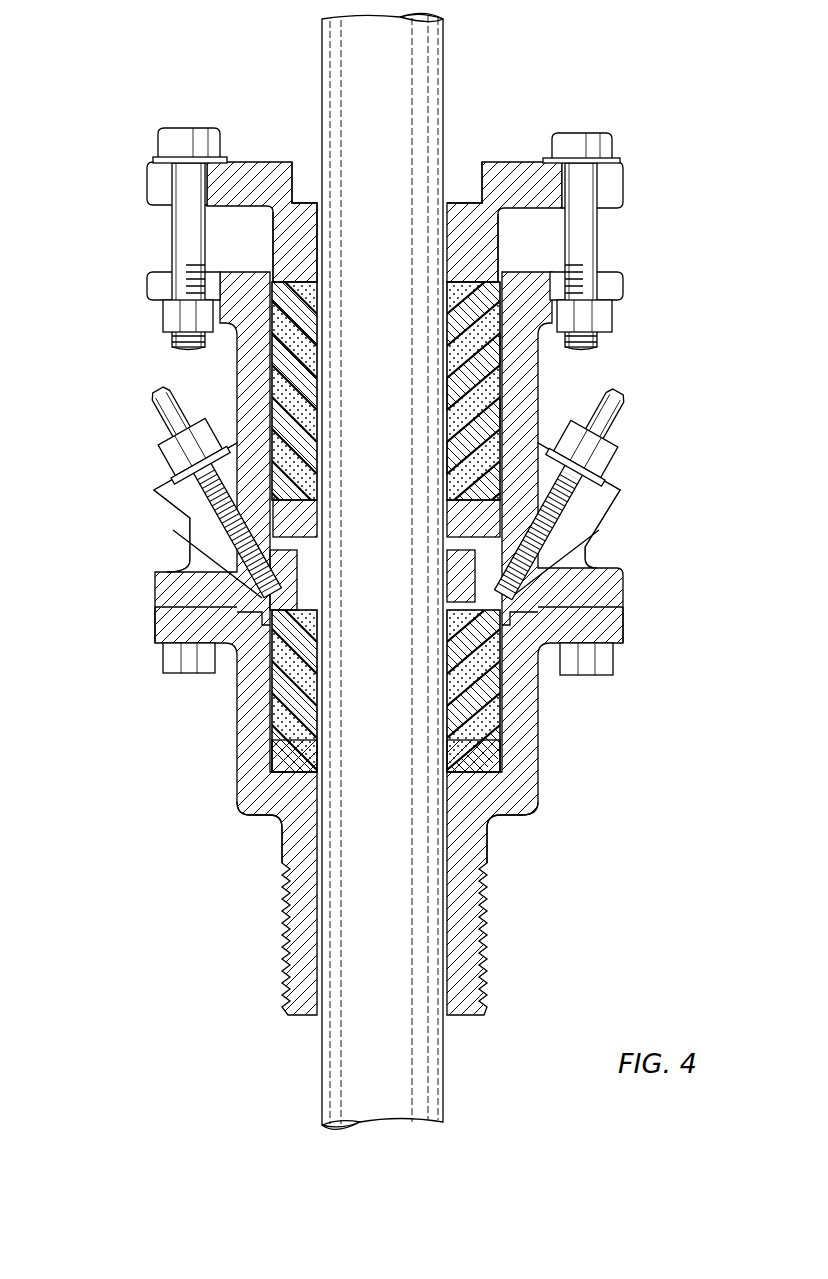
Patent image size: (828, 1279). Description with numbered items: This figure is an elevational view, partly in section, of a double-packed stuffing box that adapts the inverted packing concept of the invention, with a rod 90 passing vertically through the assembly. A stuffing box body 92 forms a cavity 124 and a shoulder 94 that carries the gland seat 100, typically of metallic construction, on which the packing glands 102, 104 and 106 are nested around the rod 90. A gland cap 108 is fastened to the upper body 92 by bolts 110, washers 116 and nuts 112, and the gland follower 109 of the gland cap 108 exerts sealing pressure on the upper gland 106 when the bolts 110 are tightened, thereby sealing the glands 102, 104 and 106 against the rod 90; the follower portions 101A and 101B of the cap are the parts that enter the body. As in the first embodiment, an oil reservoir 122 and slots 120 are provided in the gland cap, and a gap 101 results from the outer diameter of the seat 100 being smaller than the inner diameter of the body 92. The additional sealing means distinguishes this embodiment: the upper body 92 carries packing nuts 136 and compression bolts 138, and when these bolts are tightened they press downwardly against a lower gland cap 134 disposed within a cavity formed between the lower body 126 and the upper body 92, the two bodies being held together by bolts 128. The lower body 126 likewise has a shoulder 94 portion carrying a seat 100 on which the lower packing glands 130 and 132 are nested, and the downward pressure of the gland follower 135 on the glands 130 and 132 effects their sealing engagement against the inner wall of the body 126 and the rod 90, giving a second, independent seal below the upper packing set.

The rod 90 is at (440, 45).
The stuffing box body 92 is at (522, 468).
The shoulder 94 is at (552, 548).
The gland seat 100 is at (470, 493).
The gap 101 is at (550, 538).
The lower follower portion 101A is at (273, 262).
The upper follower portion 101B is at (318, 200).
The packing gland 102 is at (503, 423).
The packing gland 104 is at (492, 377).
The upper gland 106 is at (472, 340).
The gland cap 108 is at (520, 170).
The gland follower 109 is at (472, 298).
The bolt 110 is at (180, 238).
The nut 112 is at (175, 315).
The washer 116 is at (155, 160).
The slot 120 is at (152, 190).
The oil reservoir 122 is at (462, 172).
The cavity 124 is at (275, 386).
The lower body 126 is at (158, 641).
The bolt 128 is at (183, 666).
The packing gland 130 is at (282, 752).
The packing gland 132 is at (275, 697).
The lower gland cap 134 is at (270, 605).
The gland follower 135 is at (235, 612).
The packing nut 136 is at (160, 457).
The compression bolt 138 is at (158, 403).